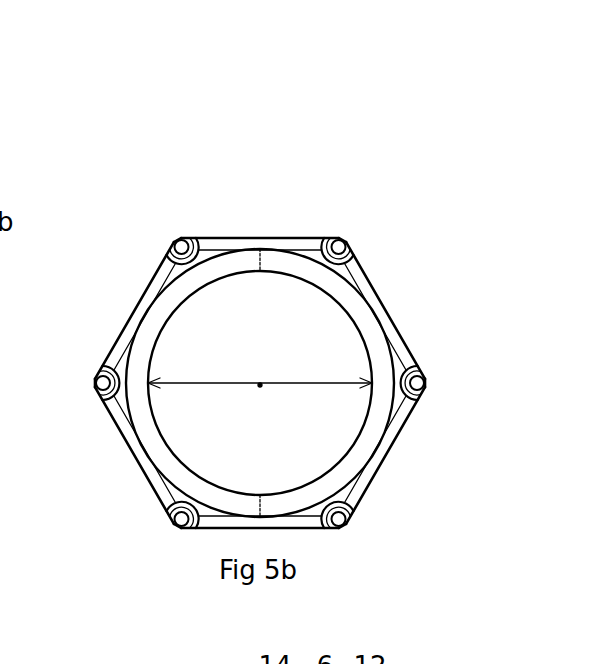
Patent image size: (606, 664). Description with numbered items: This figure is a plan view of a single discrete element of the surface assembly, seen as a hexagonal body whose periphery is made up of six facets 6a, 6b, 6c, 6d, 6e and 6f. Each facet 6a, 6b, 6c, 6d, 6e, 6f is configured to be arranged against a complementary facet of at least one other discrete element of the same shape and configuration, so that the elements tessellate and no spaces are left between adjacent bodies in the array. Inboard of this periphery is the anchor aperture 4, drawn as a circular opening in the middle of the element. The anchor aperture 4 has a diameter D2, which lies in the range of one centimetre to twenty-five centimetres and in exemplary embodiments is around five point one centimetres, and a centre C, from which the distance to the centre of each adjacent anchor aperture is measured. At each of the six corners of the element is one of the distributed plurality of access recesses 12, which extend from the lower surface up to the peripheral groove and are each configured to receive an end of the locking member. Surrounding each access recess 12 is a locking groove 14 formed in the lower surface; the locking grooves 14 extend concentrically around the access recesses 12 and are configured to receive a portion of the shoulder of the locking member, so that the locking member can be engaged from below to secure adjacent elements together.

The anchor aperture 4 is at (268, 294).
The facet 6a is at (262, 237).
The facet 6b is at (136, 306).
The facet 6c is at (134, 456).
The facet 6d is at (253, 528).
The facet 6e is at (381, 465).
The facet 6f is at (385, 310).
The access recess 12 is at (177, 248).
The locking groove 14 is at (198, 238).
The diameter D2 is at (260, 370).
The centre C is at (260, 385).